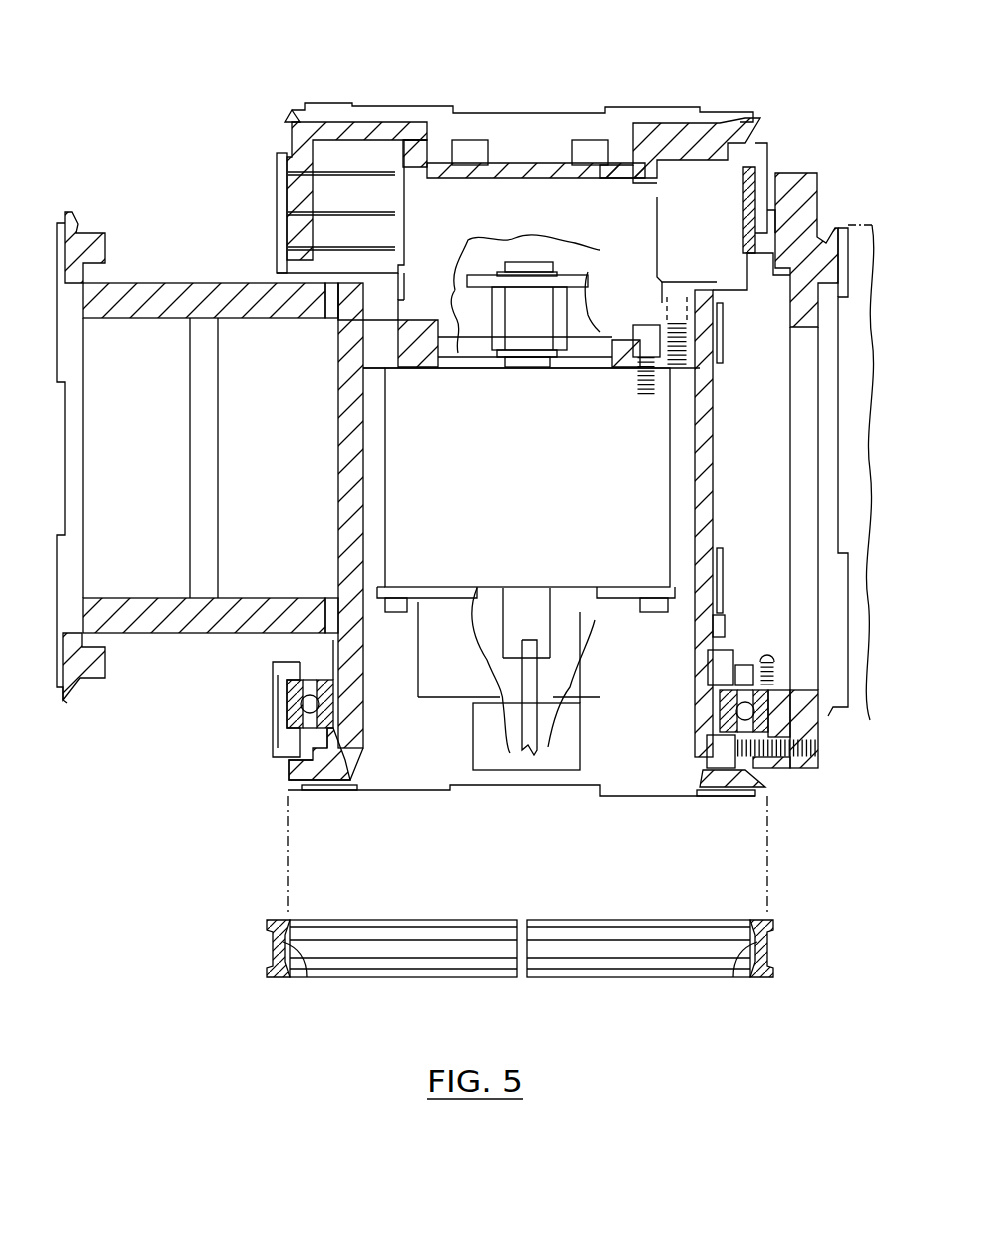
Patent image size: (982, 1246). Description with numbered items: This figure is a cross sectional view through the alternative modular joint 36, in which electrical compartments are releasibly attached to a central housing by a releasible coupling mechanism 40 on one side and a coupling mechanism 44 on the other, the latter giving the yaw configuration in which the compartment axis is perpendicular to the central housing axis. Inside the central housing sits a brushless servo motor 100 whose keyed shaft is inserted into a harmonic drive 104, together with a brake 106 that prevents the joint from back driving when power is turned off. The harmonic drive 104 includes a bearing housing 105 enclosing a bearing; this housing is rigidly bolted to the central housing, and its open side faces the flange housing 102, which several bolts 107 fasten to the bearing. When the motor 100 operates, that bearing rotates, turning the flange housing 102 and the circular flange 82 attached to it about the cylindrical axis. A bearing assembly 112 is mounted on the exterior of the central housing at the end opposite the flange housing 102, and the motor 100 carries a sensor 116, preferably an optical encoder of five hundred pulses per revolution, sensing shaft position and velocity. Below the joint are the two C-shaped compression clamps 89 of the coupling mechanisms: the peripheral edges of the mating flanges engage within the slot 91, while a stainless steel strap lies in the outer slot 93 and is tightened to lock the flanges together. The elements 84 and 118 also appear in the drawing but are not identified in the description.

The modular joint 36 is at (640, 60).
The releasible coupling mechanism 40 is at (198, 283).
The coupling mechanism 44 is at (797, 200).
The circular flange 82 is at (727, 107).
The cover plate 84 is at (55, 668).
The C-shaped compression clamp 89 is at (403, 978).
The slot 91 is at (308, 978).
The outer slot 93 is at (268, 938).
The brushless servo motor 100 is at (552, 472).
The flange housing 102 is at (292, 126).
The harmonic drive 104 is at (577, 273).
The bearing housing 105 is at (485, 215).
The brake 106 is at (613, 678).
The bolts 107 is at (471, 142).
The bearing assembly 112 is at (303, 727).
The sensor 116 is at (477, 726).
The cover plate 118 is at (530, 367).